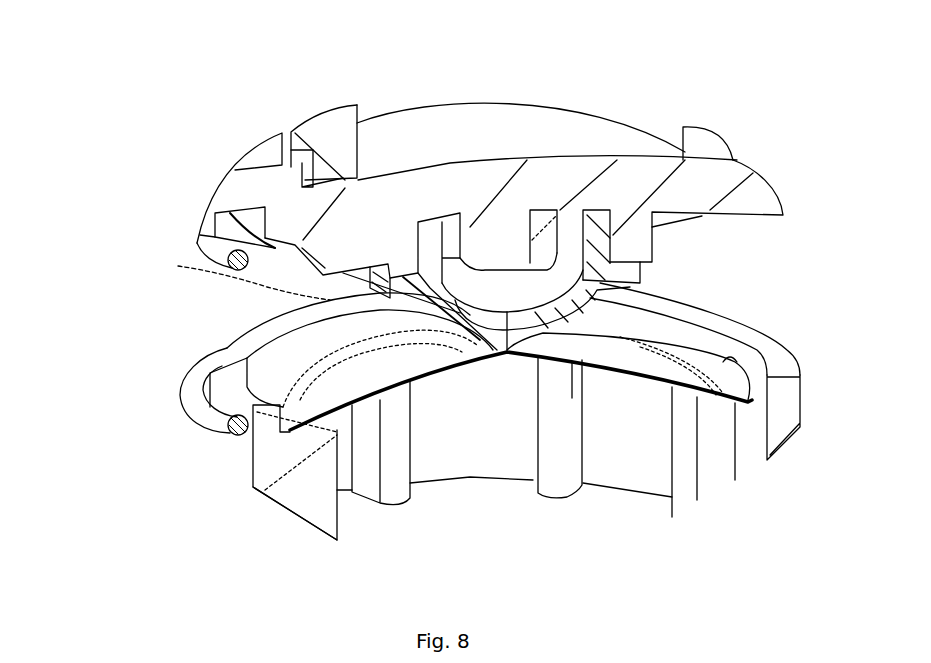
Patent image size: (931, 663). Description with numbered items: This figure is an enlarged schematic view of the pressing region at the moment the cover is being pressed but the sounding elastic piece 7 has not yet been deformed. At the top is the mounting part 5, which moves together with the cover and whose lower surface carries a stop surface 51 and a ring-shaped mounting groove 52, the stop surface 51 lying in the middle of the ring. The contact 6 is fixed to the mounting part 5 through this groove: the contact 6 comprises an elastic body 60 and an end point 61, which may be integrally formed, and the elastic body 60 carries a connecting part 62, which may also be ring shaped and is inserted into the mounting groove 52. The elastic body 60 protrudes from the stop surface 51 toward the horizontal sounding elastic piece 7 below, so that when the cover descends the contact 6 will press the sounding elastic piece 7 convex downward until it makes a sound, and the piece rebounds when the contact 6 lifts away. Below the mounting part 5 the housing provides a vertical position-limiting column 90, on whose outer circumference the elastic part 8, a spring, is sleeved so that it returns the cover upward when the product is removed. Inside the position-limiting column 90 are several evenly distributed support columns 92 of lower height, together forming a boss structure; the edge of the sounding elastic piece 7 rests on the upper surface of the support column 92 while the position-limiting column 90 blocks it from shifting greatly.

The mounting part 5 is at (632, 175).
The stop surface 51 is at (508, 237).
The mounting groove 52 is at (455, 218).
The contact 6 is at (87, 131).
The elastic body 60 is at (343, 273).
The end point 61 is at (178, 266).
The connecting part 62 is at (433, 243).
The sounding elastic piece 7 is at (630, 372).
The elastic part 8 is at (203, 407).
The position-limiting column 90 is at (267, 445).
The support column 92 is at (340, 497).